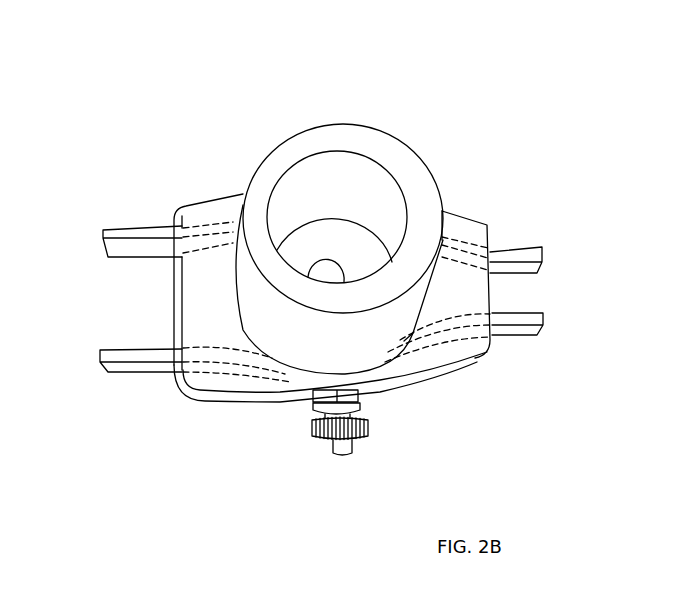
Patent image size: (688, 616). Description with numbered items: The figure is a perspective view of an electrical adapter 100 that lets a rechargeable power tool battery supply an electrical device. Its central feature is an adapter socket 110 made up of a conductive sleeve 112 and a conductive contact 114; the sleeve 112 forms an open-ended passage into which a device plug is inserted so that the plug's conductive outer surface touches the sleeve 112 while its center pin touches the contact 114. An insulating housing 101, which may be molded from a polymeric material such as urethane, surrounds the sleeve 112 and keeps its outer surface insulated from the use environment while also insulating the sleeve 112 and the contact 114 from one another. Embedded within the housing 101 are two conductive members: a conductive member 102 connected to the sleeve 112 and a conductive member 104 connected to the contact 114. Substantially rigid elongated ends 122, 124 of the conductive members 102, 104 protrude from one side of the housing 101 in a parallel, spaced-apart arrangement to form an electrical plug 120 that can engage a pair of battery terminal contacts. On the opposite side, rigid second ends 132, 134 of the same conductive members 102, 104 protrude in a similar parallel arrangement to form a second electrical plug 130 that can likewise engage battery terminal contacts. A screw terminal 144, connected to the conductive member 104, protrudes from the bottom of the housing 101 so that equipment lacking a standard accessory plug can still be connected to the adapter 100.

The electrical adapter 100 is at (430, 59).
The insulating housing 101 is at (250, 296).
The conductive member 102 is at (215, 225).
The conductive member 104 is at (220, 362).
The adapter socket 110 is at (245, 124).
The conductive sleeve 112 is at (311, 177).
The conductive contact 114 is at (320, 273).
The electrical plug 120 is at (82, 400).
The elongated end 122 is at (127, 242).
The elongated end 124 is at (137, 365).
The electrical plug 130 is at (547, 203).
The second end 132 is at (547, 260).
The second end 134 is at (513, 322).
The screw terminal 144 is at (340, 455).